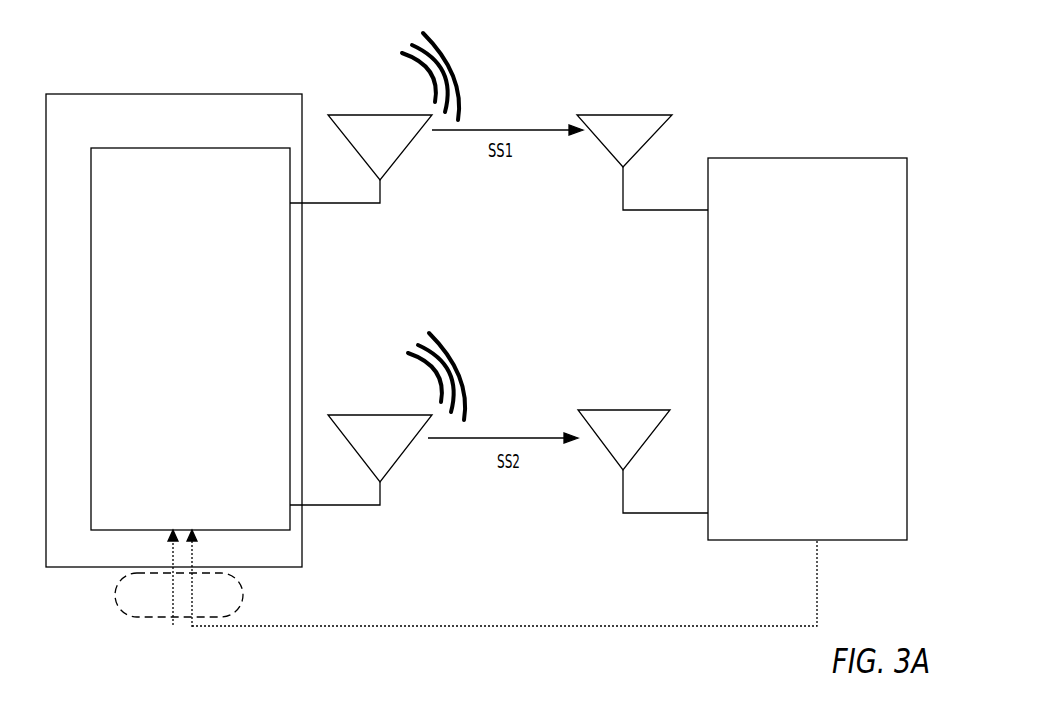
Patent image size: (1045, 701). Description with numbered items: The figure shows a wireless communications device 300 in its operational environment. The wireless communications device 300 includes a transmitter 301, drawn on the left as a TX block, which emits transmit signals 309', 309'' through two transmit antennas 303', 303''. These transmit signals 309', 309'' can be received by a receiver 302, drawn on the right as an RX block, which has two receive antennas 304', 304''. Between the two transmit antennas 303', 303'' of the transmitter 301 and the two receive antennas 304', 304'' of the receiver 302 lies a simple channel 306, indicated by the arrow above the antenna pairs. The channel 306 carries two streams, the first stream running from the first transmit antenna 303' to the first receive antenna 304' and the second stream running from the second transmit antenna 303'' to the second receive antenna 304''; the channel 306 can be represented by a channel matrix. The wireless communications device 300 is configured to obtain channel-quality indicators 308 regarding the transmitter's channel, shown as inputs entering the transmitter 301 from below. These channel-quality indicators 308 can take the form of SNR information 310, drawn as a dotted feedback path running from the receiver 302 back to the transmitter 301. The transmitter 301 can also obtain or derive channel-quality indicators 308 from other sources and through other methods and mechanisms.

The wireless communications device 300 is at (173, 94).
The transmitter 301 is at (205, 323).
The receiver 302 is at (832, 323).
The transmit antenna 303' is at (361, 159).
The transmit antenna 303'' is at (361, 460).
The receive antenna 304' is at (642, 162).
The receive antenna 304'' is at (643, 461).
The channel 306 is at (569, 52).
The channel-quality indicators 308 is at (165, 606).
The transmit signal 309' is at (454, 76).
The transmit signal 309'' is at (467, 376).
The SNR information 310 is at (492, 578).